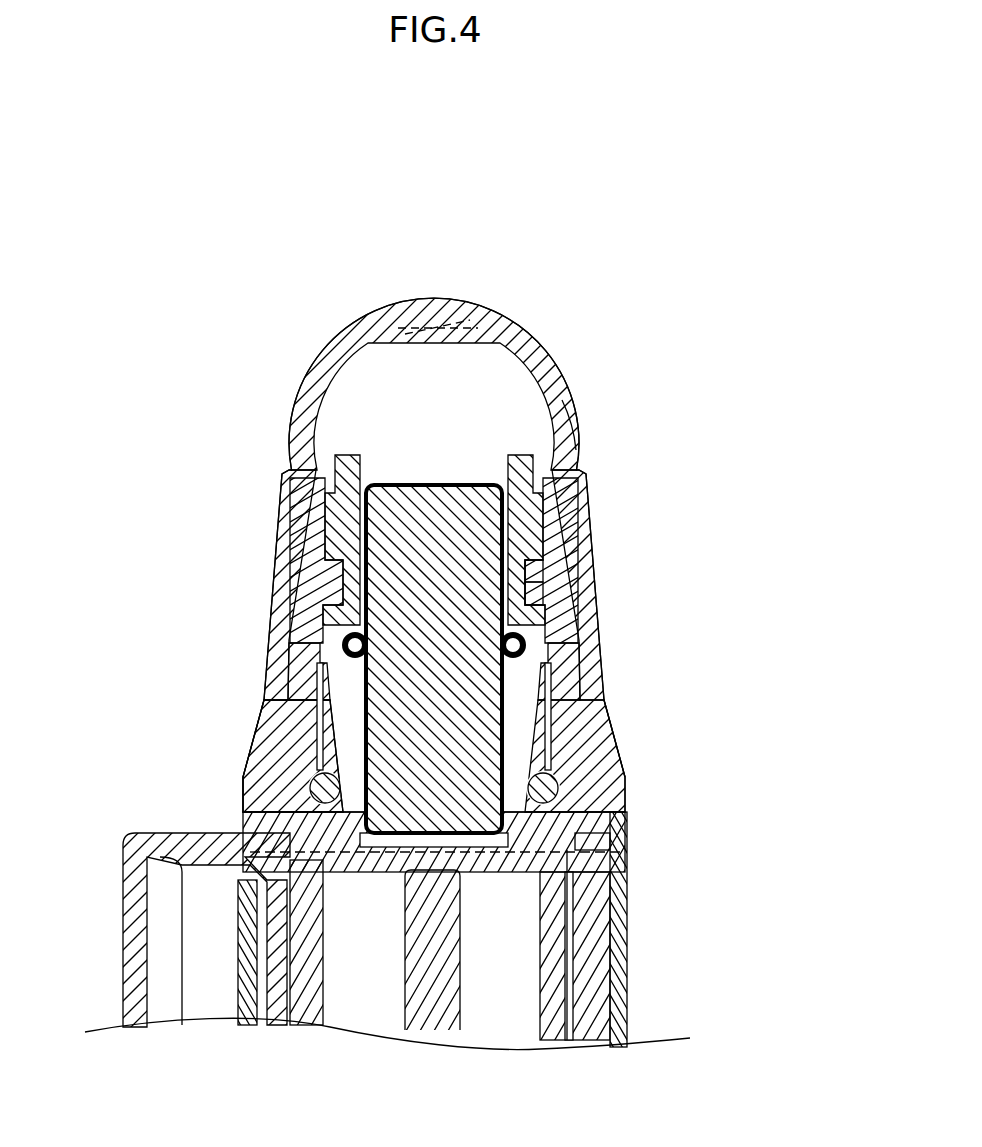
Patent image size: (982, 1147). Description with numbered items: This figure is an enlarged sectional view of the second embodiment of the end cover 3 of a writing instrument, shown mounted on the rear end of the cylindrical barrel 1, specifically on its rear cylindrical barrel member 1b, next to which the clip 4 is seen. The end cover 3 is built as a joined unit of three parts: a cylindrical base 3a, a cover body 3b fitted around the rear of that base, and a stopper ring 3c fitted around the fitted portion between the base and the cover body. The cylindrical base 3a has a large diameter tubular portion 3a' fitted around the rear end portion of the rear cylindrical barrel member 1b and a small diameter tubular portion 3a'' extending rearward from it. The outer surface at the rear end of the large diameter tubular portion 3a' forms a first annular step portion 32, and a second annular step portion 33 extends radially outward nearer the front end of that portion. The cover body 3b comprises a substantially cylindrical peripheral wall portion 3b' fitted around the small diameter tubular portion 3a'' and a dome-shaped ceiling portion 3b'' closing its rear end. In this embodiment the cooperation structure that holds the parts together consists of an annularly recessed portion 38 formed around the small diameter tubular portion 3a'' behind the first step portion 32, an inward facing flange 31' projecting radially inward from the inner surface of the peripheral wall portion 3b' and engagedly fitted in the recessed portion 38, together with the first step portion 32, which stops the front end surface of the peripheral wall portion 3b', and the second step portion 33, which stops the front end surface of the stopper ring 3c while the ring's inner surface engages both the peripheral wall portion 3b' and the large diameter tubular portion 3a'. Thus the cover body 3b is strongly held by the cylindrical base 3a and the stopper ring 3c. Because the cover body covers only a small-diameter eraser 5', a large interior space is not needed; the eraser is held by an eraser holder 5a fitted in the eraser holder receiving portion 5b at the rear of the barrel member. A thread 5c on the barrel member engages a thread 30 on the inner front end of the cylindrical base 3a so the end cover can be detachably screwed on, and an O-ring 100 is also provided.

The cylindrical barrel 1 is at (640, 942).
The rear cylindrical barrel member 1b is at (237, 922).
The end cover 3 is at (429, 283).
The cylindrical base 3a is at (491, 670).
The large diameter tubular portion 3a' is at (648, 731).
The small diameter tubular portion 3a'' is at (491, 670).
The cover body 3b is at (491, 670).
The peripheral wall portion 3b' is at (625, 414).
The ceiling portion 3b'' is at (461, 287).
The stopper ring 3c is at (602, 657).
The clip 4 is at (123, 957).
The small-diameter eraser 5' is at (491, 670).
The eraser holder 5a is at (270, 626).
The eraser holder receiving portion 5b is at (262, 707).
The thread 5c is at (608, 735).
The thread 30 is at (252, 752).
The inward facing flange 31' is at (491, 670).
The first annular step portion 32 is at (560, 630).
The second annular step portion 33 is at (262, 680).
The annularly recessed portion 38 is at (545, 600).
The O-ring 100 is at (622, 808).